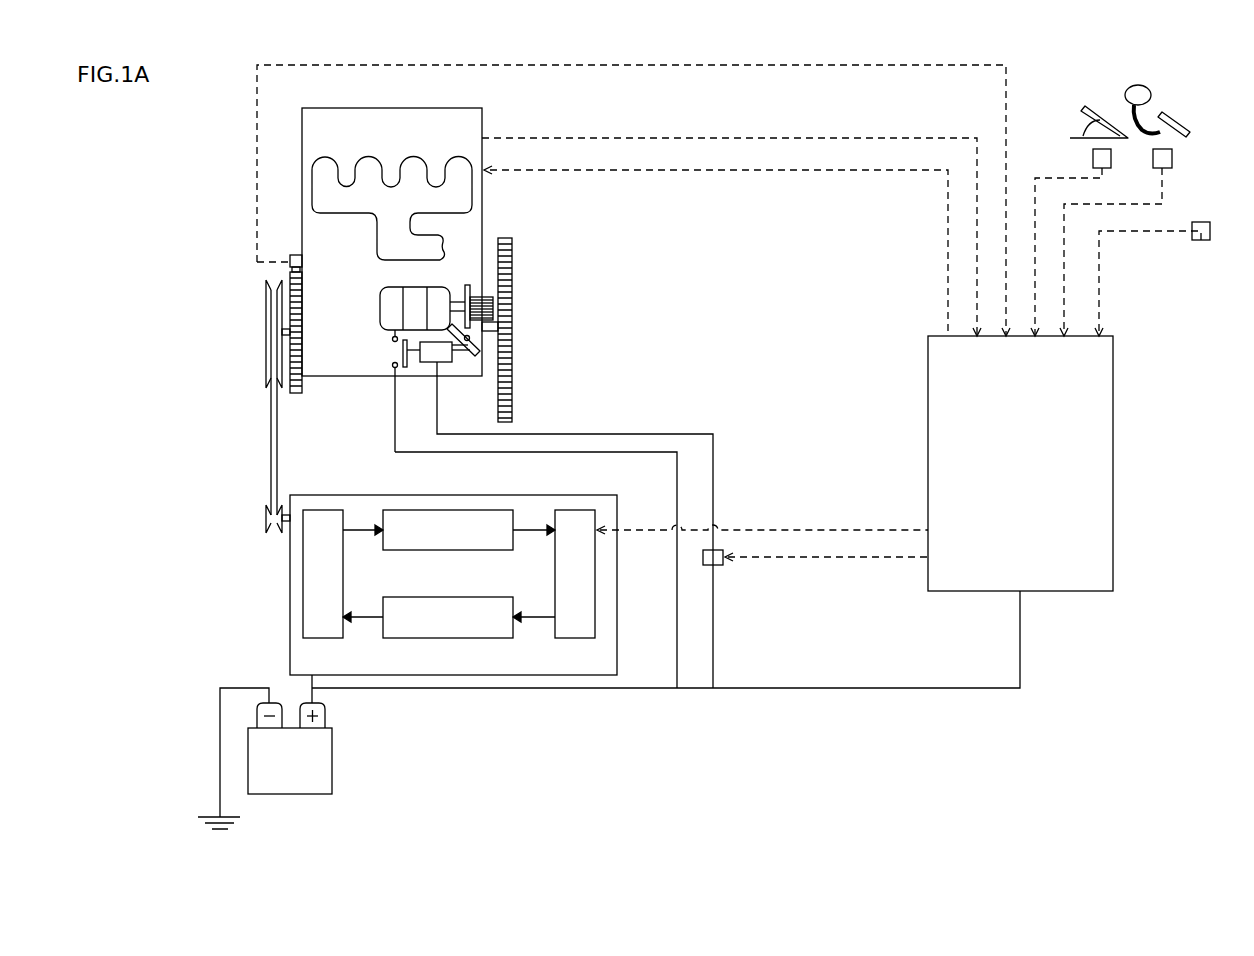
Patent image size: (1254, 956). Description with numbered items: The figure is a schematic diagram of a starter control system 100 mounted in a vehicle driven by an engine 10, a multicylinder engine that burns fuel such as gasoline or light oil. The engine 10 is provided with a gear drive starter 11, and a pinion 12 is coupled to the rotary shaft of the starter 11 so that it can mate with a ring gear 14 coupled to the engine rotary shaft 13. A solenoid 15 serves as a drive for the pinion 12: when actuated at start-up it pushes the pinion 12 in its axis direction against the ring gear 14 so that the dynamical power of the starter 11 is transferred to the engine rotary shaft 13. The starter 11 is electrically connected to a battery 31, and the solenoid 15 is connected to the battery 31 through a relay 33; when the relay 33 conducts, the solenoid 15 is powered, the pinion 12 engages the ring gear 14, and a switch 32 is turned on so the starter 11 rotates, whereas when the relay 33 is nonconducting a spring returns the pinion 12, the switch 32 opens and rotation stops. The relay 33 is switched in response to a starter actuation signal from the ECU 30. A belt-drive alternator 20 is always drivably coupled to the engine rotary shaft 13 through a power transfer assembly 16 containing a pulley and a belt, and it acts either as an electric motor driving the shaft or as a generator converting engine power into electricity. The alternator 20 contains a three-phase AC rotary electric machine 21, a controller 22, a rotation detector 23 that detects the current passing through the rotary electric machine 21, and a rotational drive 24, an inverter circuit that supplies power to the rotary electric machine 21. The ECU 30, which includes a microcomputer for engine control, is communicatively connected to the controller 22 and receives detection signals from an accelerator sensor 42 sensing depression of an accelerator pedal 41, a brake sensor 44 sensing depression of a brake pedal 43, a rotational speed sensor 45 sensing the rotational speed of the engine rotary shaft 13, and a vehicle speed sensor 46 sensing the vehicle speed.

The engine 10 is at (468, 108).
The starter 11 is at (380, 303).
The pinion 12 is at (480, 297).
The engine rotary shaft 13 is at (493, 332).
The ring gear 14 is at (509, 238).
The solenoid 15 is at (427, 363).
The power transfer assembly 16 is at (248, 336).
The alternator 20 is at (478, 569).
The rotary electric machine 21 is at (330, 510).
The controller 22 is at (578, 510).
The rotation detector 23 is at (483, 510).
The rotational drive 24 is at (432, 597).
The ECU 30 is at (1113, 370).
The battery 31 is at (332, 760).
The switch 32 is at (401, 350).
The relay 33 is at (720, 566).
The accelerator pedal 41 is at (1093, 110).
The accelerator sensor 42 is at (1111, 157).
The brake pedal 43 is at (1178, 112).
The brake sensor 44 is at (1172, 160).
The rotational speed sensor 45 is at (296, 255).
The vehicle speed sensor 46 is at (1210, 232).
The starter control system 100 is at (1105, 692).